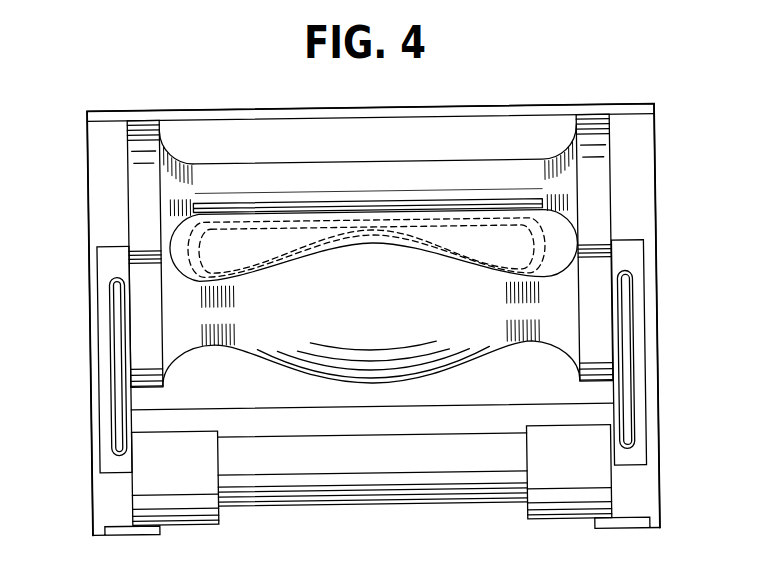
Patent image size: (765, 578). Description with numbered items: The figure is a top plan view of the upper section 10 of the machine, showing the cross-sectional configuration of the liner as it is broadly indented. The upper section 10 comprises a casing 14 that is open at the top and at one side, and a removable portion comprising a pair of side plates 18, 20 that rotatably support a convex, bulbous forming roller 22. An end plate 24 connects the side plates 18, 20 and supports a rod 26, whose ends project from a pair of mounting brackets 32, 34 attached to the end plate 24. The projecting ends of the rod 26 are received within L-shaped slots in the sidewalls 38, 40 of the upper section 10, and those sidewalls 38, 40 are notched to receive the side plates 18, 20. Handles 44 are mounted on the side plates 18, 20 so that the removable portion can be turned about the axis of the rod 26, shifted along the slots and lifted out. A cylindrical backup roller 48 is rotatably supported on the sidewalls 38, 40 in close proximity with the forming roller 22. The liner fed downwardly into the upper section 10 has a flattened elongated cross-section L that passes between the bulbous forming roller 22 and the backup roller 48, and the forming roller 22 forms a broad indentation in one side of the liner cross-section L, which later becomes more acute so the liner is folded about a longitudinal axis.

The upper section 10 is at (231, 82).
The casing 14 is at (583, 93).
The side plate 18 is at (107, 265).
The side plate 20 is at (628, 257).
The forming roller 22 is at (386, 331).
The end plate 24 is at (313, 428).
The rod 26 is at (455, 485).
The mounting bracket 32 is at (182, 488).
The mounting bracket 34 is at (565, 482).
The sidewall 38 is at (97, 195).
The sidewall 40 is at (632, 158).
The handle 44 is at (113, 338).
The backup roller 48 is at (342, 182).
The liner cross-section L is at (487, 233).